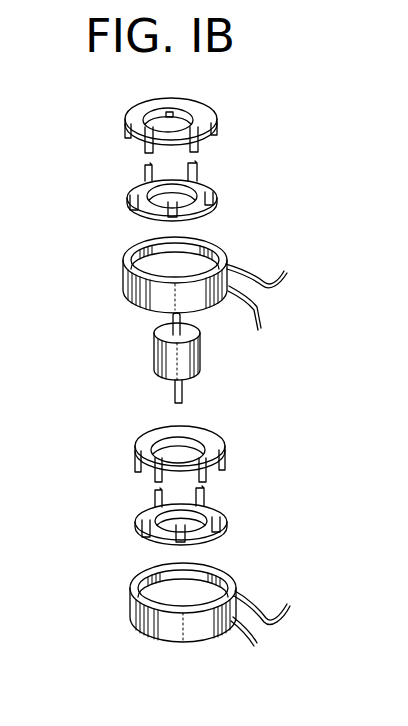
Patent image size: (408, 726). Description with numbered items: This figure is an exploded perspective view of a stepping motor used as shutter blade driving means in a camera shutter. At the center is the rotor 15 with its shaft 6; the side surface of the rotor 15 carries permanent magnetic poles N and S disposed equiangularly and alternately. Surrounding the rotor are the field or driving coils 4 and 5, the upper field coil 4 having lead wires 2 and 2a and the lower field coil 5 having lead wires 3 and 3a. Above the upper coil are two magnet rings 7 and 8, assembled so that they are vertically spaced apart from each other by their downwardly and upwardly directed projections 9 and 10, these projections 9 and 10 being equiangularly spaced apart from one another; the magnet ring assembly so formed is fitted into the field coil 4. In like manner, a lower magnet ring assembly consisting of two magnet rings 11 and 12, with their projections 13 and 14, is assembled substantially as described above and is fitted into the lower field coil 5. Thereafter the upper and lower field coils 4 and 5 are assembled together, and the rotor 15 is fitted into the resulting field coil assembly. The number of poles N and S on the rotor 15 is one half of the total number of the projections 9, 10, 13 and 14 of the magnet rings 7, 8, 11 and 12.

The lead wire 2 is at (262, 264).
The lead wire 2a is at (251, 322).
The lead wire 3 is at (269, 603).
The lead wire 3a is at (251, 649).
The field coil 4 is at (217, 250).
The lower field coil 5 is at (232, 587).
The shaft 6 is at (172, 318).
The magnet ring 7 is at (200, 111).
The magnet ring 8 is at (203, 186).
The projections 9 is at (147, 147).
The projections 10 is at (133, 208).
The magnet ring 11 is at (212, 442).
The magnet ring 12 is at (225, 532).
The projections 13 is at (152, 478).
The projections 14 is at (143, 533).
The rotor 15 is at (157, 360).